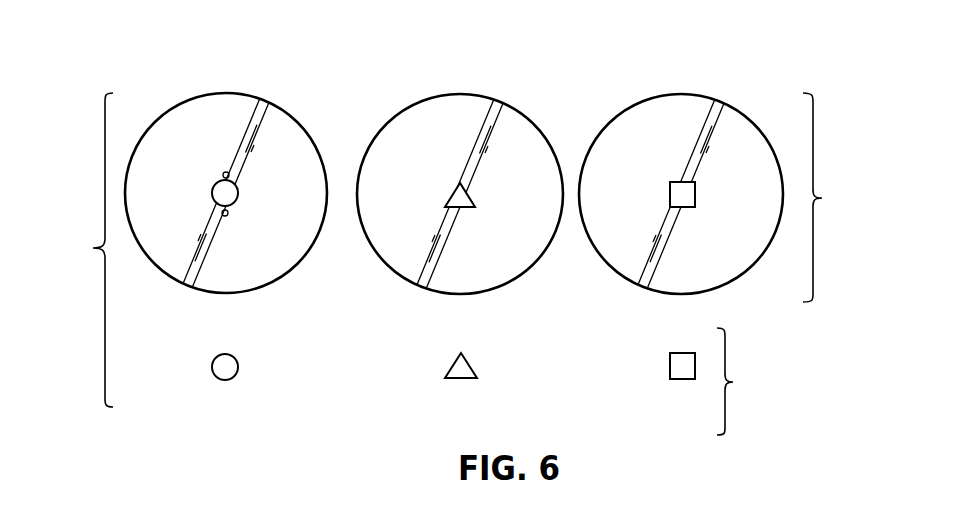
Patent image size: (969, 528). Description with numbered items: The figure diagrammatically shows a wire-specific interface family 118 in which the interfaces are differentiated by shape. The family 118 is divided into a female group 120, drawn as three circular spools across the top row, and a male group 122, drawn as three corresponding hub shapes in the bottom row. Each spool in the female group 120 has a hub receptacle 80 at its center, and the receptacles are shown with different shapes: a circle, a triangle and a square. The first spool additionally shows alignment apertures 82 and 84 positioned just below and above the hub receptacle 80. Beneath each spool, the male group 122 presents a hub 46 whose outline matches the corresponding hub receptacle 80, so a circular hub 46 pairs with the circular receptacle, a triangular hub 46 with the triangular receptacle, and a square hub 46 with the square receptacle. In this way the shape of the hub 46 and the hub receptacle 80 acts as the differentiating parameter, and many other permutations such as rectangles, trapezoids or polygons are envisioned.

The hub 46 is at (213, 360).
The hub receptacle 80 is at (213, 190).
The alignment aperture 82 is at (229, 216).
The alignment aperture 84 is at (223, 172).
The family 118 is at (92, 247).
The female group 120 is at (820, 197).
The male group 122 is at (732, 382).